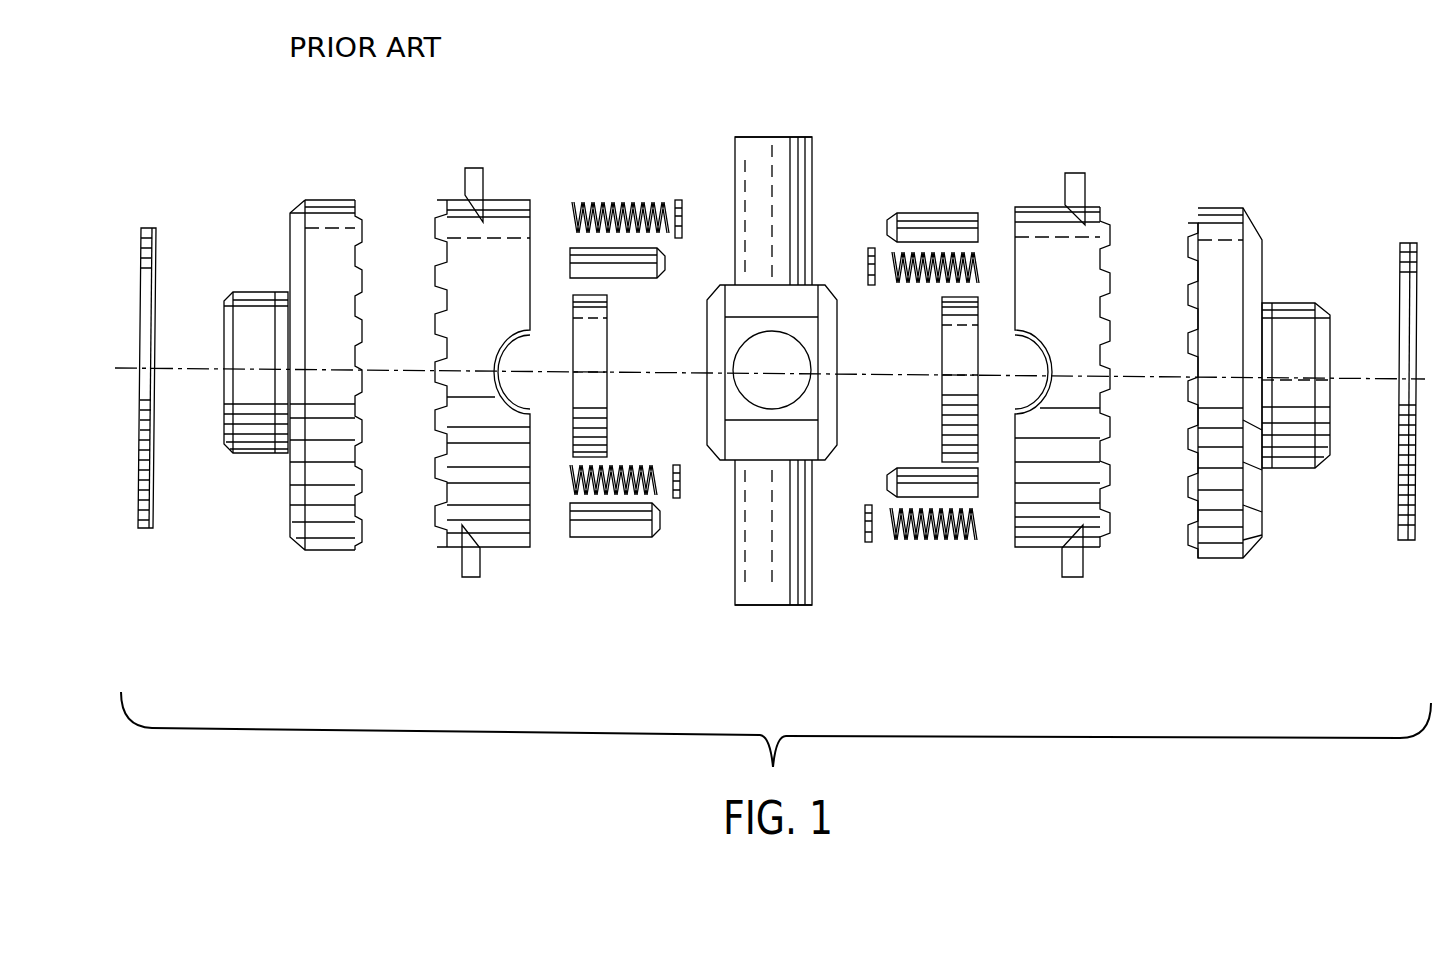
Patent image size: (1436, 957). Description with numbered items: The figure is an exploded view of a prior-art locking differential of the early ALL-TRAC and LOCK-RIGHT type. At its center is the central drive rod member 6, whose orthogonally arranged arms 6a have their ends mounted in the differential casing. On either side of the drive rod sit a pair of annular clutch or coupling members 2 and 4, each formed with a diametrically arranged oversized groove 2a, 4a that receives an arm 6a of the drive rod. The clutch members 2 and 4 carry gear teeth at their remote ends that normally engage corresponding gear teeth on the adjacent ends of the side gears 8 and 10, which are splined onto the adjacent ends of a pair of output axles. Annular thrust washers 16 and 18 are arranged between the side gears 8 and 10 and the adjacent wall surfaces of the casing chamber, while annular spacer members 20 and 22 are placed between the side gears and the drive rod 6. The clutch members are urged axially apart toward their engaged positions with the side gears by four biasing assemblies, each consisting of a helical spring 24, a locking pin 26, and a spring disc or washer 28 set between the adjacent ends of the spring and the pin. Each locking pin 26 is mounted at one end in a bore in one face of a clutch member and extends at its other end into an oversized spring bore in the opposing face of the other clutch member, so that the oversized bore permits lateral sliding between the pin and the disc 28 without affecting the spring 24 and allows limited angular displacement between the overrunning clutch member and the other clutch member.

The annular clutch member 2 is at (495, 232).
The oversized groove 2a is at (503, 369).
The annular clutch member 4 is at (1033, 222).
The oversized groove 4a is at (1043, 374).
The central drive rod member 6 is at (780, 145).
The arm 6a is at (783, 212).
The side gear 8 is at (330, 228).
The side gear 10 is at (1215, 220).
The annular thrust washer 16 is at (150, 275).
The annular thrust washer 18 is at (1400, 262).
The annular spacer member 20 is at (598, 405).
The annular spacer member 22 is at (957, 355).
The helical spring 24 is at (622, 222).
The locking pin 26 is at (625, 263).
The spring disc 28 is at (682, 212).